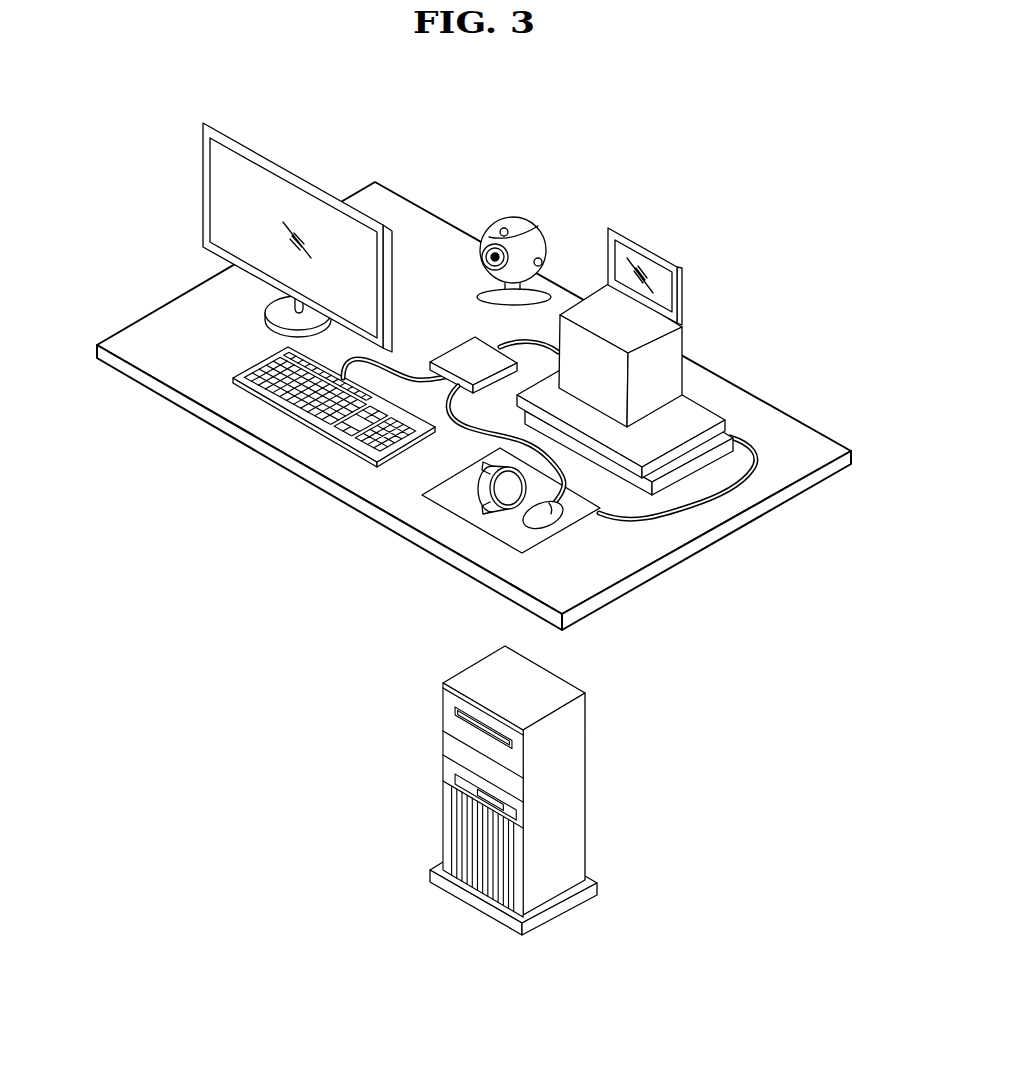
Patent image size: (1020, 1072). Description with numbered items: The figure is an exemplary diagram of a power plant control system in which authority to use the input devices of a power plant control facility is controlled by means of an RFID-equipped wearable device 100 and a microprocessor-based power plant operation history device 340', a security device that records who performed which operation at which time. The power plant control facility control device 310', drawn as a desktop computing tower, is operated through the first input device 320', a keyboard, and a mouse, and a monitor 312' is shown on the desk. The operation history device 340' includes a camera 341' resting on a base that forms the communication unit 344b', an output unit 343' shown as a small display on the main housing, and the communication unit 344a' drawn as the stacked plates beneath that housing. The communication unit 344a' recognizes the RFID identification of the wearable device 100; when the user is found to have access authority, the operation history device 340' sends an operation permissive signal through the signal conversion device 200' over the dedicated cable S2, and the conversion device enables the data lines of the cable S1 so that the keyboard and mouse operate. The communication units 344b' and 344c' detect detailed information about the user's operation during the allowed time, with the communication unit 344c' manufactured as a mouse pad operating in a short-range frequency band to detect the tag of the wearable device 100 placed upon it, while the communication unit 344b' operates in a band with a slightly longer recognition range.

The display device (monitor) 312' is at (297, 236).
The signal conversion device 200' is at (430, 268).
The dedicated cable S2 is at (500, 347).
The camera 341' is at (521, 224).
The communication unit 344b' is at (540, 255).
The output unit 343' is at (650, 257).
The power plant operation history device 340' is at (667, 355).
The communication unit 344a' is at (683, 421).
The first input device 320' is at (331, 429).
The wearable device 100 is at (478, 500).
The communication unit 344c' is at (503, 538).
The cable S1 is at (683, 503).
The power plant control facility control device 310' is at (546, 790).